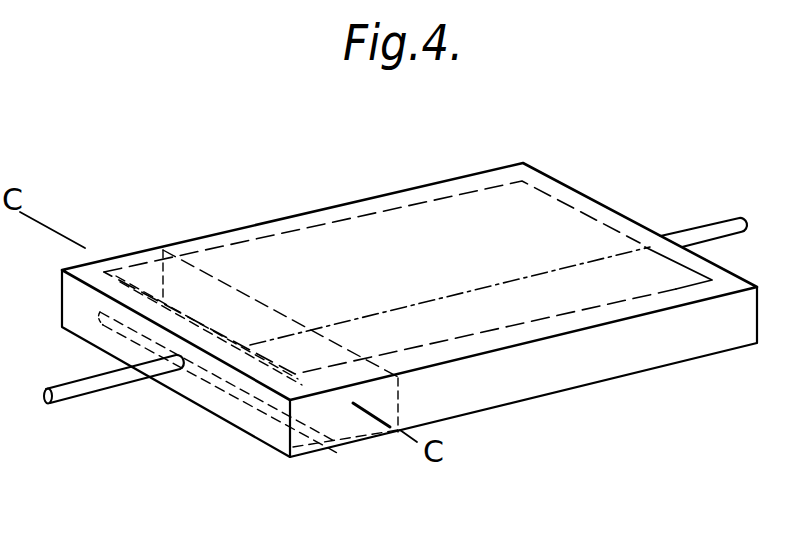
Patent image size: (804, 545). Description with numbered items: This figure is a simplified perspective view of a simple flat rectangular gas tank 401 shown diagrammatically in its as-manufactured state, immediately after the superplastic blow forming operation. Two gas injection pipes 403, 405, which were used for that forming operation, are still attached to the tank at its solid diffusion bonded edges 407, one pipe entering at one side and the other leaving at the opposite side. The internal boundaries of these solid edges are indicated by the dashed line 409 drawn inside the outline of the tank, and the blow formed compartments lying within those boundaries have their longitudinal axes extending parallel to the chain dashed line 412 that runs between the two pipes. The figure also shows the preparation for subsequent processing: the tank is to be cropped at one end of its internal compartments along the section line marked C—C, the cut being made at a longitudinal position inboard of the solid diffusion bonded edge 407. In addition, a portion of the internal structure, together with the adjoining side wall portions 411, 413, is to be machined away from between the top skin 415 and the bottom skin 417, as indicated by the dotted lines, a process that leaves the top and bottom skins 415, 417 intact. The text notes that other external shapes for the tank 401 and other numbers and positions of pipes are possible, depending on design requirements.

The flat rectangular tank 401 is at (318, 186).
The gas injection pipe 403 is at (82, 385).
The gas injection pipe 405 is at (712, 228).
The solid diffusion bonded edges 407 is at (590, 205).
The dashed line 409 is at (267, 240).
The side wall portion 411 is at (367, 423).
The chain dashed line 412 is at (520, 277).
The side wall portion 413 is at (134, 264).
The top skin 415 is at (155, 293).
The bottom skin 417 is at (347, 448).